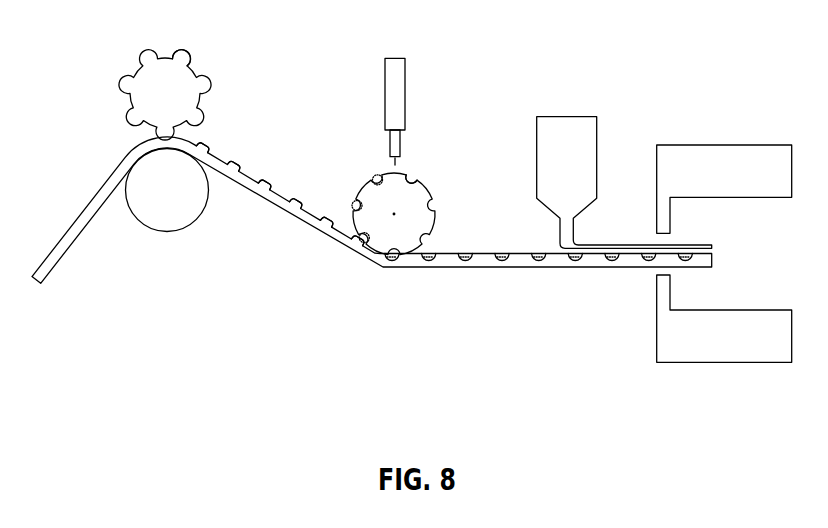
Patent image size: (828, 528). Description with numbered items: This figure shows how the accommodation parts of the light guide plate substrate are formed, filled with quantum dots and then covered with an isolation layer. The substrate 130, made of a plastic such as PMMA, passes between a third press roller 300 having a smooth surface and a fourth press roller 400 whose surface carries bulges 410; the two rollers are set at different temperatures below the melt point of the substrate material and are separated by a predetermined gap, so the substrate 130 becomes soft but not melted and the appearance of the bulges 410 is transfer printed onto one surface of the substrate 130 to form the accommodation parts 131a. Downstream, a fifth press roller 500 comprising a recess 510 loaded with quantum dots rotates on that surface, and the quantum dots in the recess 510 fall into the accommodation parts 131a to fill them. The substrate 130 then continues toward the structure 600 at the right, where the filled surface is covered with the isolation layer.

The substrate 130 is at (112, 185).
The accommodation parts 131a is at (264, 187).
The third press roller 300 is at (175, 200).
The fourth press roller 400 is at (185, 93).
The bulges 410 is at (187, 57).
The fifth press roller 500 is at (402, 223).
The recess 510 is at (412, 180).
The guide bracket 600 is at (695, 153).